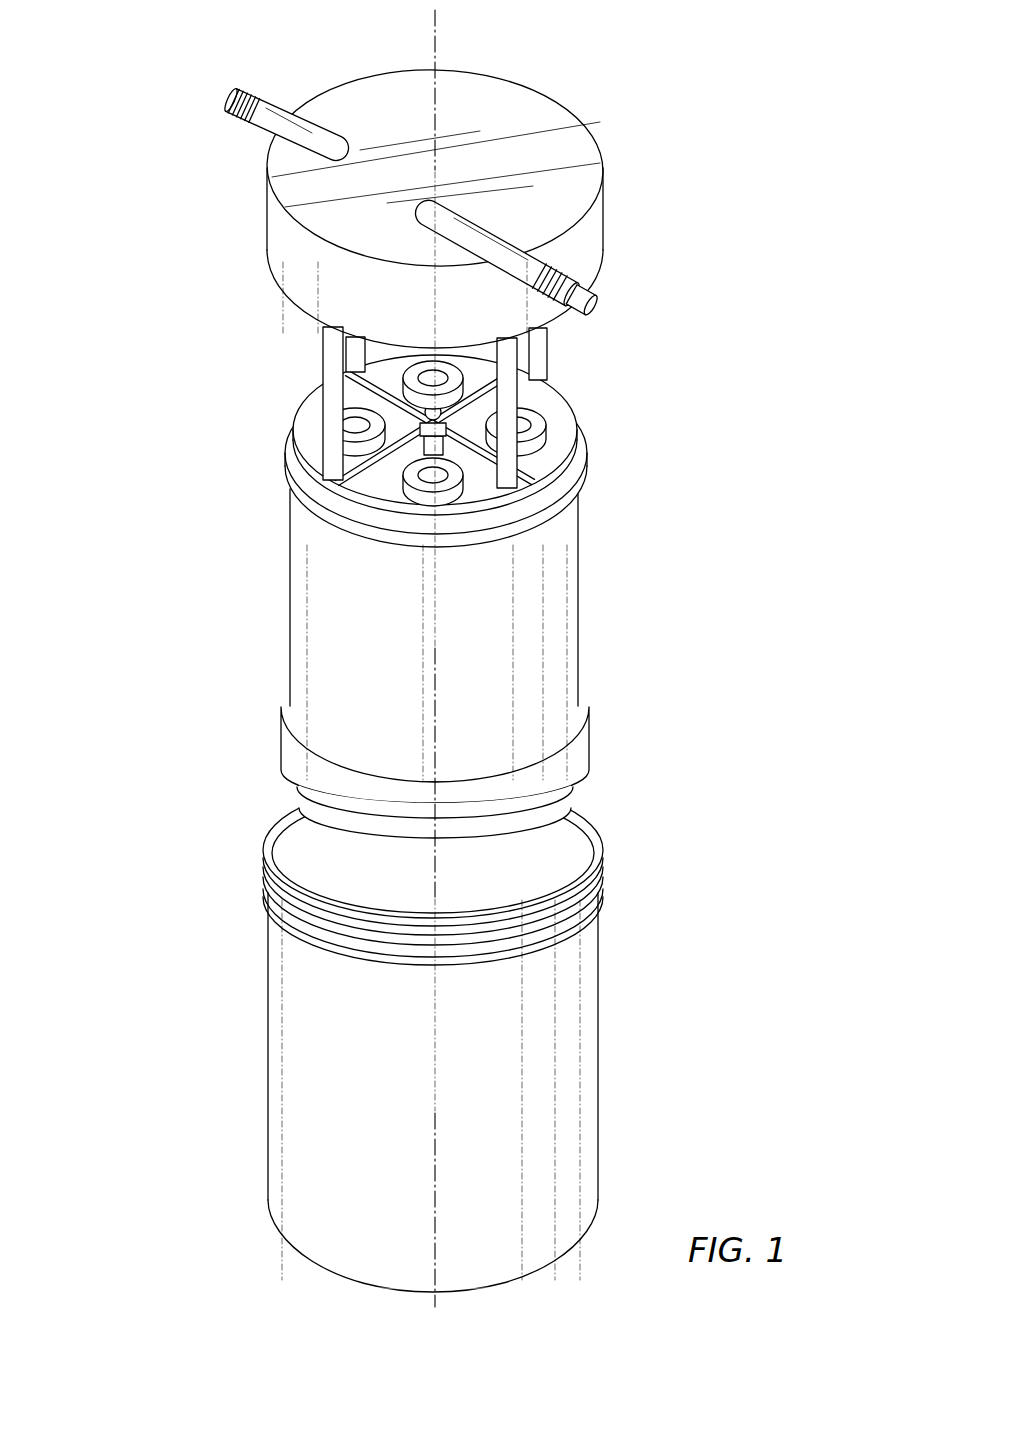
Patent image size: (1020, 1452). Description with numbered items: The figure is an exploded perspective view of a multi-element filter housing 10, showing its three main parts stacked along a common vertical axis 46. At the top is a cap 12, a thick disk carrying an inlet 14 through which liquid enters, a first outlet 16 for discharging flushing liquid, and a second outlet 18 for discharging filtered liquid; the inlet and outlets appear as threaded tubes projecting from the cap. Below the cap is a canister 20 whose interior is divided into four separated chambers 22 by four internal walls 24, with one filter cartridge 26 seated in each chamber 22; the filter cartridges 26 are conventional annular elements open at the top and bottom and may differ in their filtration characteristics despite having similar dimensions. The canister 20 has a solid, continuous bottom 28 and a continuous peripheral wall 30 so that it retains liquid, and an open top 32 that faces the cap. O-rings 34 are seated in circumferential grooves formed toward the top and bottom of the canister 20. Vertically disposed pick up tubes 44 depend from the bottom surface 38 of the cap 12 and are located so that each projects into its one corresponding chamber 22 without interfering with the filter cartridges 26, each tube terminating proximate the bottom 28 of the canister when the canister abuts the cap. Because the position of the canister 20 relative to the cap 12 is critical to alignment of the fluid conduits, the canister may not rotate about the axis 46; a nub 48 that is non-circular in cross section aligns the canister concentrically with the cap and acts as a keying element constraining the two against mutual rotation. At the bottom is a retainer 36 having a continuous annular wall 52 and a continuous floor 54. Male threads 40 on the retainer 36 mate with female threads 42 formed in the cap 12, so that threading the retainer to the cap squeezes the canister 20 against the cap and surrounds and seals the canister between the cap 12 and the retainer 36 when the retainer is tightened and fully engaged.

The multi-element filter housing 10 is at (500, 664).
The cap 12 is at (334, 231).
The inlet 14 is at (289, 112).
The first outlet 16 is at (615, 287).
The second outlet 18 is at (523, 230).
The canister 20 is at (501, 585).
The chambers 22 is at (292, 386).
The internal walls 24 is at (478, 362).
The filter cartridges 26 is at (432, 375).
The bottom 28 is at (513, 846).
The peripheral wall 30 is at (461, 599).
The open top 32 is at (675, 319).
The O-rings 34 is at (583, 448).
The retainer 36 is at (490, 1050).
The bottom surface 38 is at (564, 334).
The male threads 40 is at (283, 897).
The female threads 42 is at (278, 318).
The pick up tubes 44 is at (536, 358).
The axis 46 is at (436, 36).
The nub 48 is at (381, 348).
The annular wall 52 is at (461, 1043).
The floor 54 is at (512, 1292).